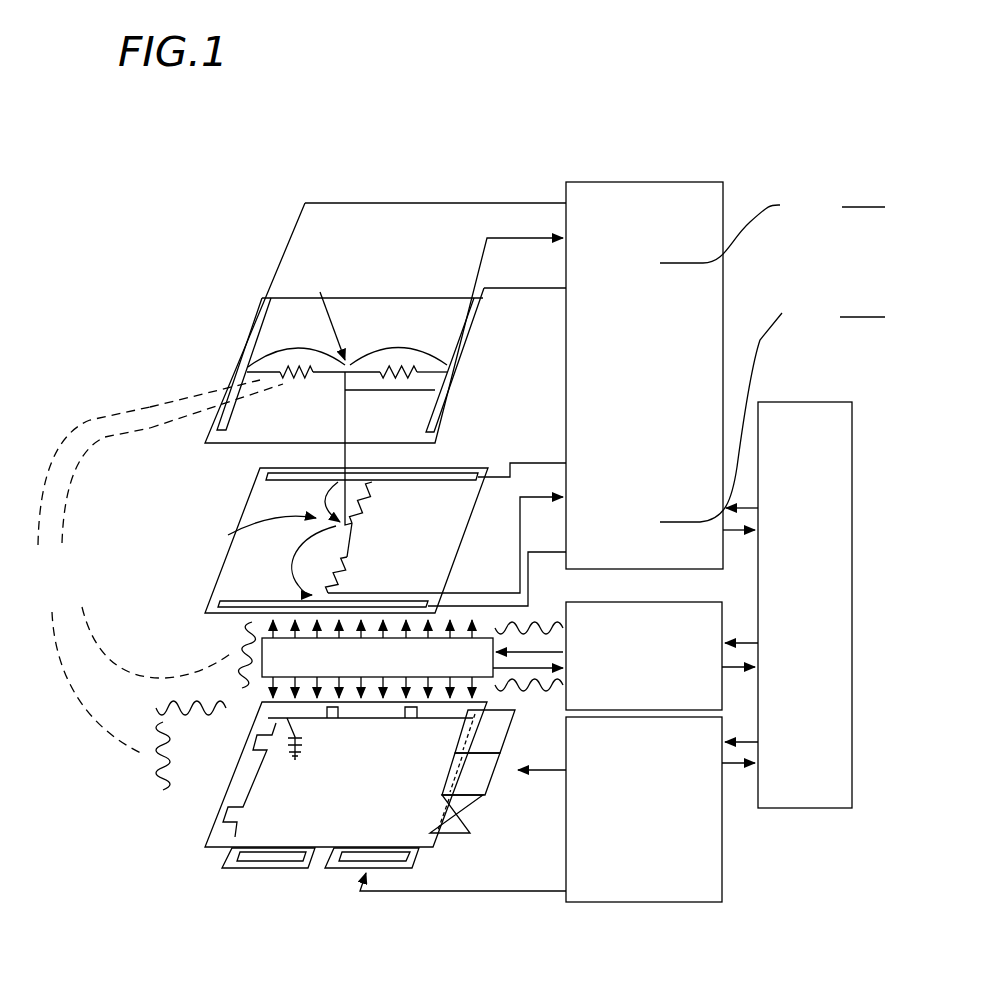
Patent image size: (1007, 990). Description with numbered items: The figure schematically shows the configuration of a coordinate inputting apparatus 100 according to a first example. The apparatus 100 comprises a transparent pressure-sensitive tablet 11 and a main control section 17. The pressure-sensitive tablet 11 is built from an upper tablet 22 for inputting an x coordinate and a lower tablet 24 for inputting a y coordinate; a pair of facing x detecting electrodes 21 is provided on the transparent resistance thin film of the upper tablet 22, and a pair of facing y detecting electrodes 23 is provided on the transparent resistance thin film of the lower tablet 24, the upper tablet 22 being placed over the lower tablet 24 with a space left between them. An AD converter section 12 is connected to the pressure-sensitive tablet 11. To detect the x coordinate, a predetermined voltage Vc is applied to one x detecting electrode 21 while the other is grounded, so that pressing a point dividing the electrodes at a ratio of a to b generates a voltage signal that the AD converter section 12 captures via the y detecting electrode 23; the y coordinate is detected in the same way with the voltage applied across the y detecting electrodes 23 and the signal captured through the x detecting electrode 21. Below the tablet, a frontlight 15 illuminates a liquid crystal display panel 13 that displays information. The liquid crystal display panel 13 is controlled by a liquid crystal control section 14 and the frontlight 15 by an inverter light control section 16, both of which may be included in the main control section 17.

The coordinate inputting apparatus 100 is at (754, 143).
The pressure-sensitive tablet 11 is at (240, 262).
The AD converter section 12 is at (623, 181).
The liquid crystal display panel 13 is at (215, 817).
The liquid crystal control section 14 is at (625, 902).
The frontlight 15 is at (262, 650).
The inverter light control section 16 is at (594, 601).
The main control section 17 is at (798, 401).
The x detecting electrode 21 is at (258, 310).
The upper tablet 22 is at (247, 372).
The y detecting electrode 23 is at (457, 470).
The lower tablet 24 is at (213, 583).